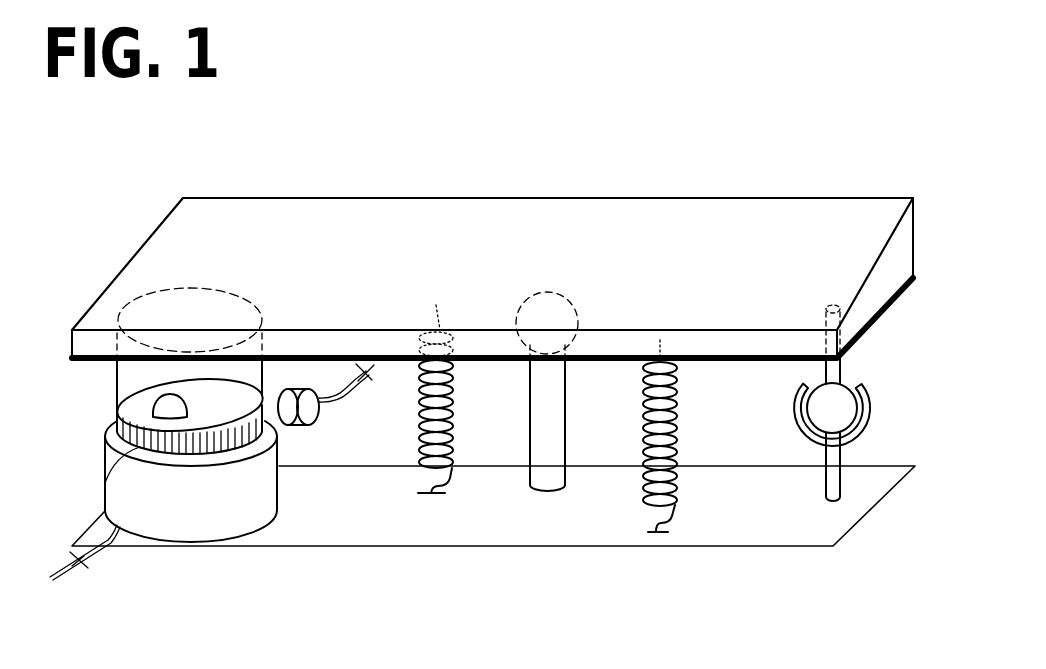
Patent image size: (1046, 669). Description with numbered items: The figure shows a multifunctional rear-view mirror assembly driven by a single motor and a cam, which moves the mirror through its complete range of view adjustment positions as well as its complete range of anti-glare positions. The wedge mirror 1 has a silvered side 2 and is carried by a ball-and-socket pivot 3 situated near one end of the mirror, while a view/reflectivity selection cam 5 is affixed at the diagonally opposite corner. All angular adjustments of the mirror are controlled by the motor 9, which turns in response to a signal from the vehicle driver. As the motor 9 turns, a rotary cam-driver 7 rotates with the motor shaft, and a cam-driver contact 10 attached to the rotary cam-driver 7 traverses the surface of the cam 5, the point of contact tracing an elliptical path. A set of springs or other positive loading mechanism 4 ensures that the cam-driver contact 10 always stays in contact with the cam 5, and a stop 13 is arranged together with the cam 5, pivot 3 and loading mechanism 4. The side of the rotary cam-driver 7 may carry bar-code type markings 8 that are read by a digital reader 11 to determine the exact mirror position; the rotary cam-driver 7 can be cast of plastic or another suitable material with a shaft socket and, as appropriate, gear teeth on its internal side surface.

The wedge mirror 1 is at (250, 197).
The silvered side 2 is at (710, 362).
The ball-and-socket pivot 3 is at (821, 478).
The positive loading mechanism 4 is at (452, 387).
The view/reflectivity selection cam 5 is at (113, 377).
The rotary cam-driver 7 is at (105, 490).
The bar-code type markings 8 is at (112, 410).
The motor 9 is at (220, 541).
The cam-driver contact 10 is at (183, 416).
The digital reader 11 is at (302, 427).
The stop 13 is at (566, 455).